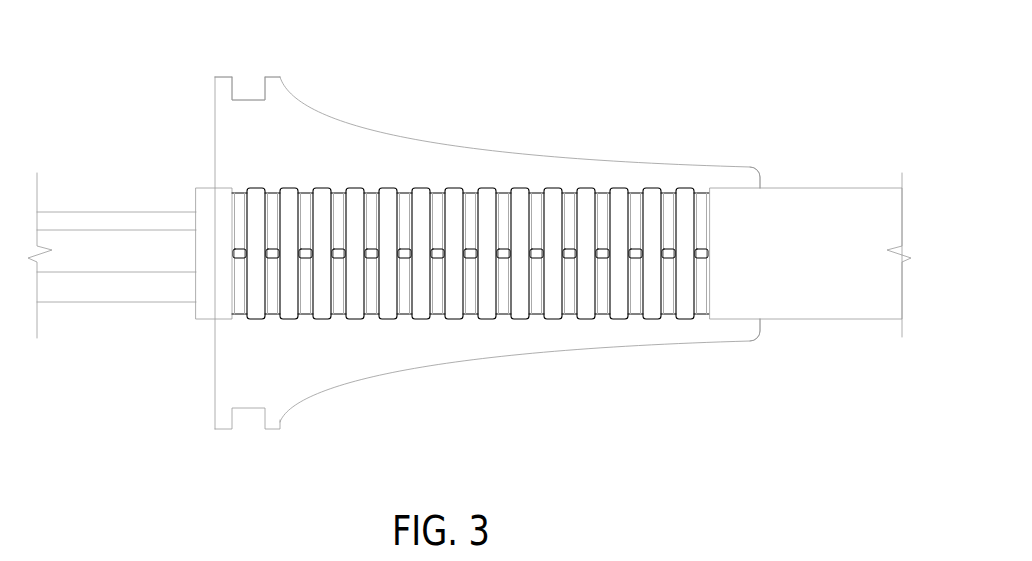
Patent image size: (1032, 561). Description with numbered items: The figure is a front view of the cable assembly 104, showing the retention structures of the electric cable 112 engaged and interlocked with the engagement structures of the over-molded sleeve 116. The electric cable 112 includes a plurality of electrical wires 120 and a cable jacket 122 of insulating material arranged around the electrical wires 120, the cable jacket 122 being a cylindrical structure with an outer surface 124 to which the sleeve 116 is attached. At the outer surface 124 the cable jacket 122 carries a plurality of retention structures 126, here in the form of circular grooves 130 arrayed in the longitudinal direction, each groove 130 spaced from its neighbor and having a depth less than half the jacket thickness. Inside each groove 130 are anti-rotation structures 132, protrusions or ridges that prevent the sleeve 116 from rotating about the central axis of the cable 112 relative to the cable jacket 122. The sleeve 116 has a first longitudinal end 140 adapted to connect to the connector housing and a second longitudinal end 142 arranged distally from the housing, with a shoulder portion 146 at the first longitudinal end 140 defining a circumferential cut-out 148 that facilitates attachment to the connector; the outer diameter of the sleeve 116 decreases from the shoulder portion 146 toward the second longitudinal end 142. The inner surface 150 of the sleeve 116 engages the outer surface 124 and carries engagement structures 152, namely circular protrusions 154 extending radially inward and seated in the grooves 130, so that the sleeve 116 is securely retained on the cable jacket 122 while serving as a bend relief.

The cable assembly 104 is at (615, 70).
The electric cable 112 is at (880, 320).
The over-molded sleeve 116 is at (470, 149).
The electrical wires 120 is at (128, 277).
The cable jacket 122 is at (195, 308).
The outer surface 124 is at (802, 268).
The retention structures 126 is at (307, 307).
The grooves 130 is at (304, 192).
The anti-rotation structures 132 is at (306, 258).
The first longitudinal end 140 is at (215, 90).
The second longitudinal end 142 is at (762, 330).
The shoulder portion 146 is at (219, 77).
The cut-out 148 is at (253, 70).
The inner surface 150 is at (726, 188).
The engagement structures 152 is at (173, 170).
The circular protrusions 154 is at (340, 312).